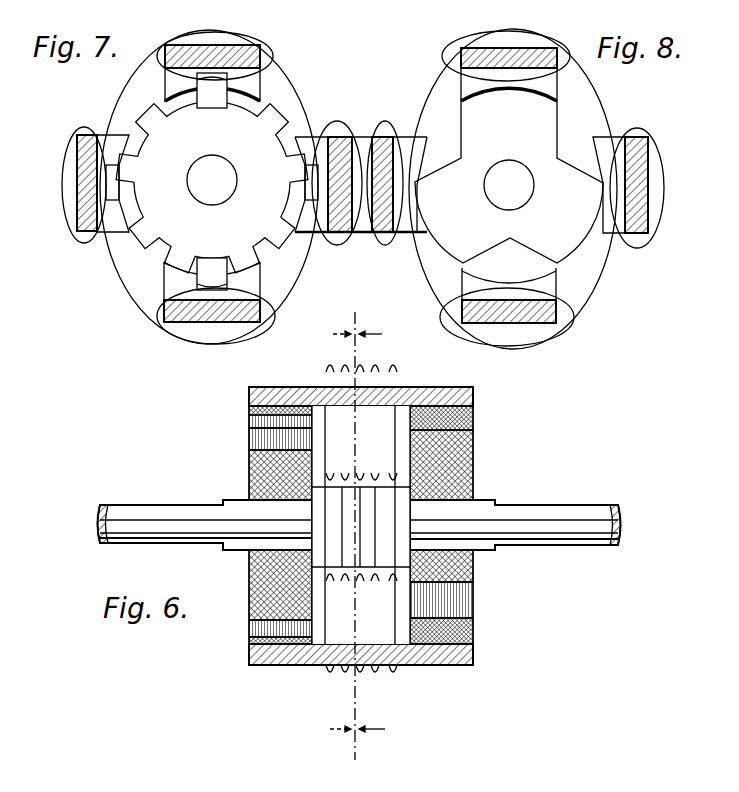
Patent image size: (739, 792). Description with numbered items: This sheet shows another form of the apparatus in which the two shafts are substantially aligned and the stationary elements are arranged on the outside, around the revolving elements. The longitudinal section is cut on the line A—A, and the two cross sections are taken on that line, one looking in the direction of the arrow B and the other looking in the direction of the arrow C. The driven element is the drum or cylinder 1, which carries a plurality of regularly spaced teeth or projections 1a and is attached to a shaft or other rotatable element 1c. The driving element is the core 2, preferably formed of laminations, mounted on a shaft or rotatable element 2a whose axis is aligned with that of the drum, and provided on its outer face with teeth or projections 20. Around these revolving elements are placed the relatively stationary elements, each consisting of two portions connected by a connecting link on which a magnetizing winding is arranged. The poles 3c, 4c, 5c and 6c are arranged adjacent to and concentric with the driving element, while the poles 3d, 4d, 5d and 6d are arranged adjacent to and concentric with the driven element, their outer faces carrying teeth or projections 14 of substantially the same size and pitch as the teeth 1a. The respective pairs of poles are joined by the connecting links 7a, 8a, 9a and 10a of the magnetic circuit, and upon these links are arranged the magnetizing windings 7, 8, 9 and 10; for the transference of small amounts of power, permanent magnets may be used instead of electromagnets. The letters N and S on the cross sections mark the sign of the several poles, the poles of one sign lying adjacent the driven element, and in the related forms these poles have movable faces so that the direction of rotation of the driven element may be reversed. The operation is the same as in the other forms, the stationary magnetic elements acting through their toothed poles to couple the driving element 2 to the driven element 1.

In FIG. 7, the drum or cylinder 1 is at (212, 187).
In FIG. 6, the drum or cylinder 1 is at (254, 470).
In FIG. 7, the teeth or projections 1a is at (290, 182).
In FIG. 7, the shaft or rotatable element 1c is at (212, 180).
In FIG. 6, the shaft or rotatable element 1c is at (150, 516).
In FIG. 8, the core 2 is at (509, 165).
In FIG. 6, the core 2 is at (473, 469).
In FIG. 8, the shaft or rotatable element 2a is at (509, 185).
In FIG. 6, the shaft or rotatable element 2a is at (552, 516).
In FIG. 8, the pole 3c is at (558, 82).
In FIG. 6, the pole 3c is at (475, 426).
In FIG. 7, the pole 3d is at (253, 81).
In FIG. 6, the pole 3d is at (250, 420).
In FIG. 8, the pole 4c is at (548, 282).
In FIG. 7, the pole 4d is at (252, 287).
In FIG. 8, the pole 5c is at (603, 140).
In FIG. 7, the pole 5d is at (100, 134).
In FIG. 8, the pole 6c is at (410, 148).
In FIG. 7, the pole 6d is at (323, 137).
In FIG. 7, the magnetizing winding 7 is at (221, 35).
In FIG. 8, the magnetizing winding 7 is at (519, 32).
In FIG. 6, the magnetizing winding 7 is at (375, 388).
In FIG. 7, the connecting link 7a is at (234, 60).
In FIG. 8, the connecting link 7a is at (533, 53).
In FIG. 6, the connecting link 7a is at (408, 383).
In FIG. 7, the magnetizing winding 8 is at (202, 333).
In FIG. 8, the magnetizing winding 8 is at (548, 335).
In FIG. 6, the magnetizing winding 8 is at (361, 654).
In FIG. 7, the connecting link 8a is at (238, 313).
In FIG. 8, the connecting link 8a is at (498, 308).
In FIG. 6, the connecting link 8a is at (408, 667).
In FIG. 7, the magnetizing winding 9 is at (371, 143).
In FIG. 8, the connecting link 9a is at (383, 150).
In FIG. 7, the magnetizing winding 10 is at (66, 188).
In FIG. 8, the magnetizing winding 10 is at (668, 181).
In FIG. 6, the magnetizing winding 10 is at (336, 462).
In FIG. 7, the connecting link 10a is at (77, 152).
In FIG. 8, the connecting link 10a is at (642, 163).
In FIG. 6, the connecting link 10a is at (388, 494).
In FIG. 7, the teeth or projections 14 is at (117, 243).
In FIG. 8, the teeth or projections 20 is at (421, 180).
In FIG. 7, the north pole N is at (180, 72).
In FIG. 8, the north pole N is at (623, 202).
In FIG. 6, the north pole N is at (250, 410).
In FIG. 7, the south pole S is at (100, 207).
In FIG. 8, the south pole S is at (492, 75).
In FIG. 6, the south pole S is at (473, 412).
In FIG. 6, the section line A— A is at (355, 535).
In FIG. 6, the arrow B is at (363, 637).
In FIG. 6, the arrow C is at (348, 532).